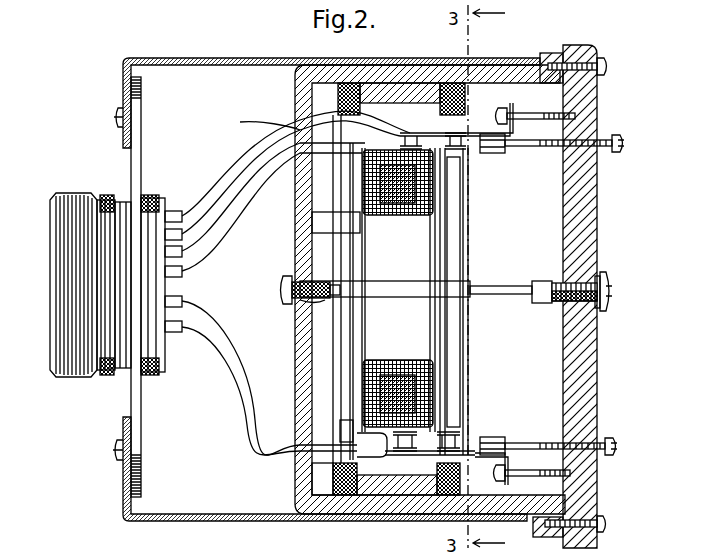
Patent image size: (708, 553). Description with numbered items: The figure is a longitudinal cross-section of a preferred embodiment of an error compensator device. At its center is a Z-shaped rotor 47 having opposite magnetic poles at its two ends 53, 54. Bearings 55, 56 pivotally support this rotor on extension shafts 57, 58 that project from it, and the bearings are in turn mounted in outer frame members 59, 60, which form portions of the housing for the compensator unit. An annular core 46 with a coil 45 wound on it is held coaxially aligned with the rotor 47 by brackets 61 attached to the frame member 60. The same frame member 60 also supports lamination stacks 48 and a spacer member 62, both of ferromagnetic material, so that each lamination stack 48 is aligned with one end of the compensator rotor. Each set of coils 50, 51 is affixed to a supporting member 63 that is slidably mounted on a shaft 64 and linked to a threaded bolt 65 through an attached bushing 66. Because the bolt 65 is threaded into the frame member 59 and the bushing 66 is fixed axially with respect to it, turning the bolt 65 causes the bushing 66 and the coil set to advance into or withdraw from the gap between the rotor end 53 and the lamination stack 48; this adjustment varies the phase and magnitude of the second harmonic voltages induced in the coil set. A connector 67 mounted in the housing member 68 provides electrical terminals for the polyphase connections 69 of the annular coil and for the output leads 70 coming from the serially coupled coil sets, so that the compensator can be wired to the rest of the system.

The coil 45 is at (435, 368).
The annular core 46 is at (432, 386).
The Z-shaped rotor 47 is at (465, 298).
The lamination stacks 48 is at (455, 83).
The coil set 50 is at (399, 137).
The coil set 51 is at (468, 147).
The rotor end 53 is at (463, 150).
The rotor end 54 is at (335, 441).
The bearing 55 is at (540, 281).
The bearing 56 is at (283, 290).
The extension shaft 57 is at (494, 286).
The extension shaft 58 is at (322, 300).
The outer frame member 59 is at (597, 238).
The outer frame member 60 is at (295, 492).
The brackets 61 is at (330, 225).
The spacer member 62 is at (372, 85).
The supporting member 63 is at (476, 133).
The shaft 64 is at (526, 113).
The threaded bolt 65 is at (600, 140).
The bushing 66 is at (492, 153).
The connector 67 is at (79, 193).
The housing member 68 is at (178, 48).
The polyphase connections 69 is at (232, 166).
The output leads 70 is at (284, 127).